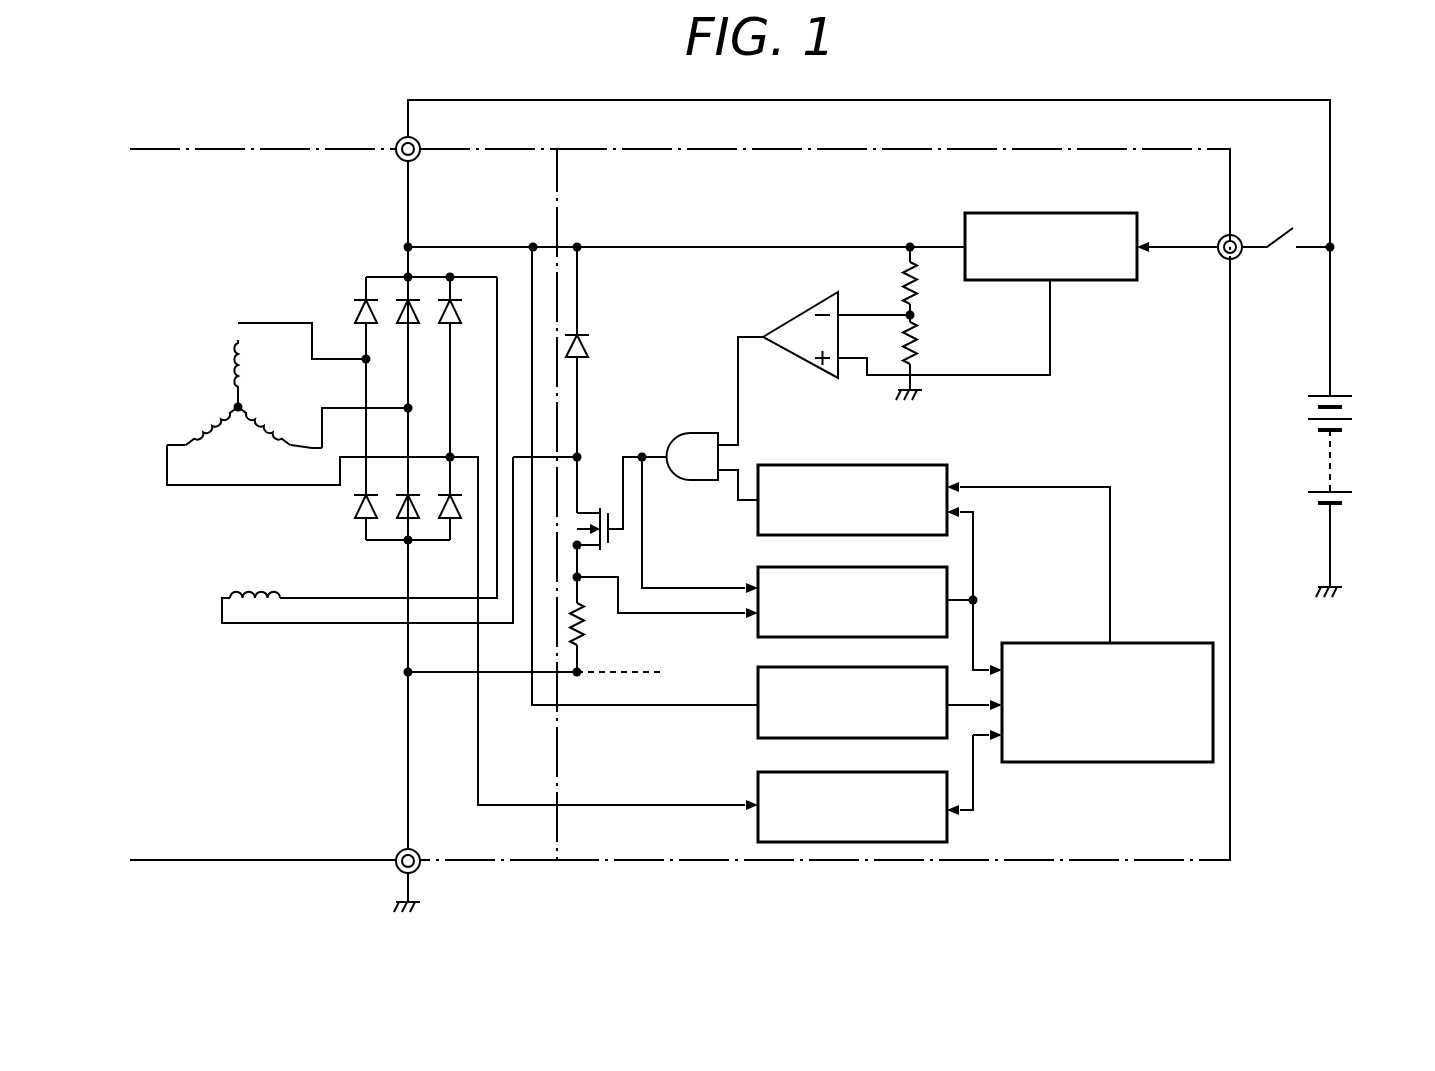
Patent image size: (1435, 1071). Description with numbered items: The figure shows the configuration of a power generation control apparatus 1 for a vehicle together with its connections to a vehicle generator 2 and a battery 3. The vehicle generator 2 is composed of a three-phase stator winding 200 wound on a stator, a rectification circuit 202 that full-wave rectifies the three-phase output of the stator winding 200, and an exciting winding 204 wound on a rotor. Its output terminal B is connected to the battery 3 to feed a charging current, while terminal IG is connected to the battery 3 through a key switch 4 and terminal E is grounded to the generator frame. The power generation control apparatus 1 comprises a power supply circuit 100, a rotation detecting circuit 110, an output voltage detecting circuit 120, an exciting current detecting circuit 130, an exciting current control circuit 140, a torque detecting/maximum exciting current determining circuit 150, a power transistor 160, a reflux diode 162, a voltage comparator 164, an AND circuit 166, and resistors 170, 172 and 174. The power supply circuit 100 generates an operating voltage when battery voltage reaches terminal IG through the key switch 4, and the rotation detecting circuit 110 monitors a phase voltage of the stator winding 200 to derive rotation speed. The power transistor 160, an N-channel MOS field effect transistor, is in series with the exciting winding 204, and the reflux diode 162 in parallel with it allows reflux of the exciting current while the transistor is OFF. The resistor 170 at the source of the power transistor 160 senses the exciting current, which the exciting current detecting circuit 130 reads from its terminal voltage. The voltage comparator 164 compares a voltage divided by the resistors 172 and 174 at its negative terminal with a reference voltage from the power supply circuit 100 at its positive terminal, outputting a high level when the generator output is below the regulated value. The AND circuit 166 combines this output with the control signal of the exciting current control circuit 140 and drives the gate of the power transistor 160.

The power generation control apparatus 1 is at (1178, 148).
The vehicle generator 2 is at (157, 149).
The battery 3 is at (1343, 396).
The key switch 4 is at (1280, 252).
The power supply circuit 100 is at (1100, 213).
The rotation detecting circuit 110 is at (757, 793).
The output voltage detecting circuit 120 is at (757, 690).
The exciting current detecting circuit 130 is at (778, 567).
The exciting current control circuit 140 is at (855, 465).
The torque detecting/maximum exciting current determining circuit 150 is at (1165, 643).
The power transistor 160 is at (590, 511).
The reflux diode 162 is at (585, 335).
The voltage comparator 164 is at (795, 318).
The AND circuit 166 is at (700, 433).
The resistor 170 is at (592, 625).
The resistor 172 is at (928, 300).
The resistor 174 is at (928, 345).
The three-phase stator winding 200 is at (236, 405).
The rectification circuit 202 is at (375, 277).
The exciting winding 204 is at (248, 588).